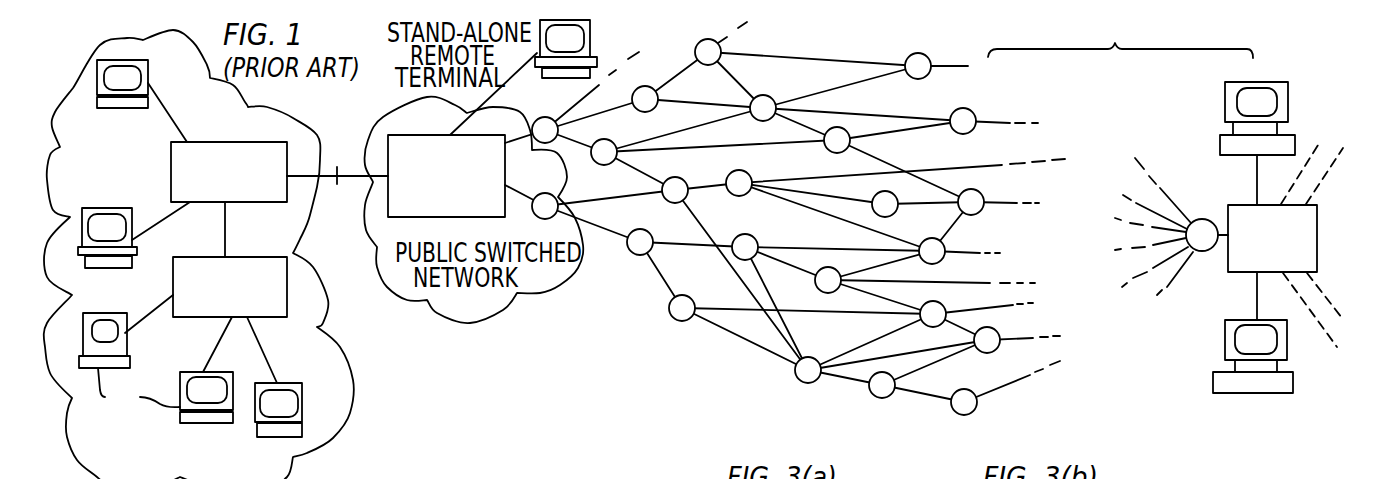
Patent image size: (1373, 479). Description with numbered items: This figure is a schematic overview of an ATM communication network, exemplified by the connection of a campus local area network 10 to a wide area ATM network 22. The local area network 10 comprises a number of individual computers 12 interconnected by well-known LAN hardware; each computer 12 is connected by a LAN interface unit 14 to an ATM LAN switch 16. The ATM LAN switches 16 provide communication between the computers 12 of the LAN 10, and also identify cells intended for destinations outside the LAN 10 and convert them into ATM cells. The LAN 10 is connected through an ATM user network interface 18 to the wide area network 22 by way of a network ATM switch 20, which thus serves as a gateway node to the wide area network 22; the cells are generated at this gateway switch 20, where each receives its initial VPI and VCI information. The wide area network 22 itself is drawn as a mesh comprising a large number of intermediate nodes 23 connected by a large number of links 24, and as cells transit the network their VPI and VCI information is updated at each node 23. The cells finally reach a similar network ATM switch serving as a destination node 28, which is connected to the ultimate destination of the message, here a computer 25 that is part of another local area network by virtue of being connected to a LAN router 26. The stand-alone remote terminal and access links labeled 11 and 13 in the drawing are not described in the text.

The local area network 10 is at (347, 420).
The workstation 11 is at (162, 115).
The individual computer 12 is at (215, 230).
The UNI access link 13 is at (508, 95).
The LAN interface unit 14 is at (297, 352).
The ATM LAN switch 16 is at (287, 285).
The ATM user network interface 18 is at (340, 138).
The network ATM switch 20 is at (444, 112).
The wide area ATM network 22 is at (1040, 398).
The intermediate node 23 is at (700, 42).
The link 24 is at (783, 55).
The computer 25 is at (1272, 82).
The LAN router 26 is at (1318, 232).
The destination node 28 is at (1205, 257).